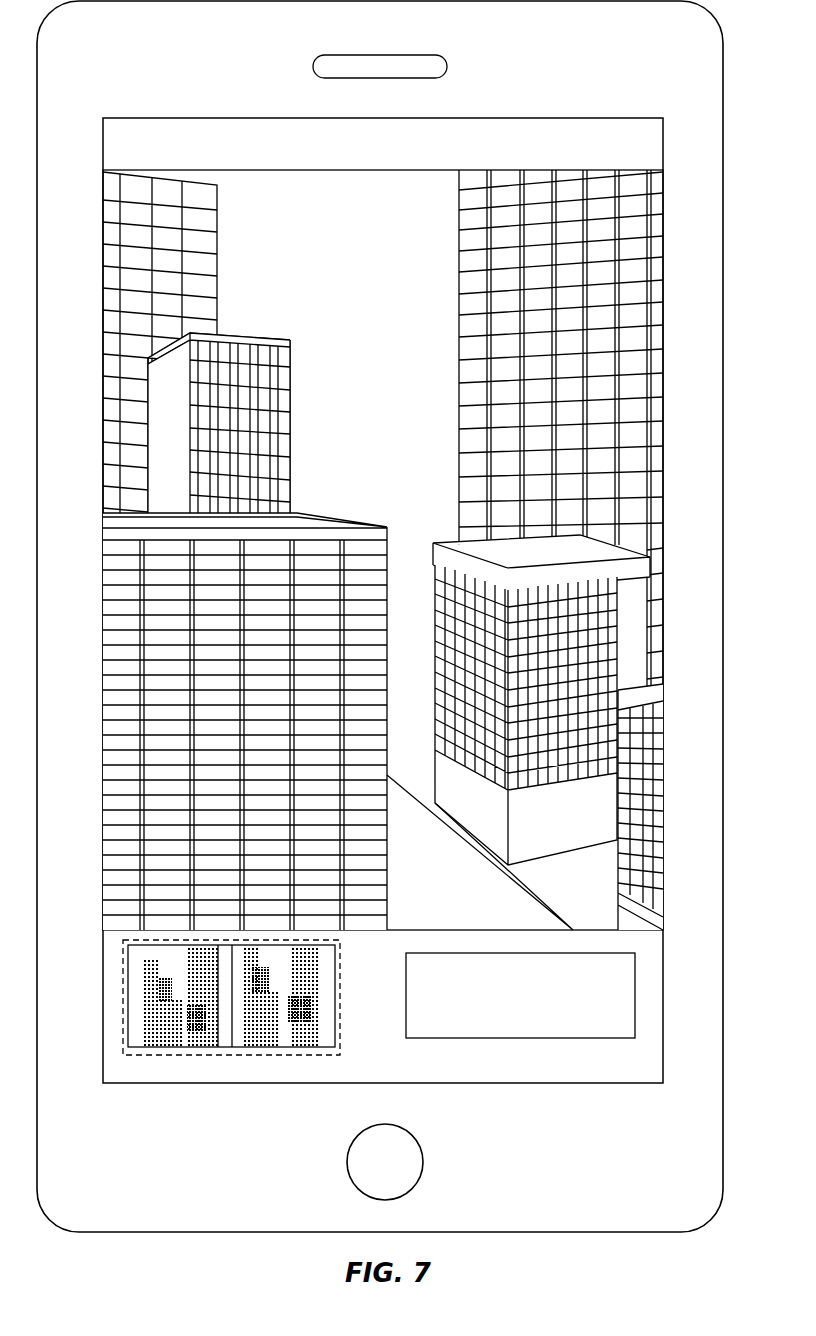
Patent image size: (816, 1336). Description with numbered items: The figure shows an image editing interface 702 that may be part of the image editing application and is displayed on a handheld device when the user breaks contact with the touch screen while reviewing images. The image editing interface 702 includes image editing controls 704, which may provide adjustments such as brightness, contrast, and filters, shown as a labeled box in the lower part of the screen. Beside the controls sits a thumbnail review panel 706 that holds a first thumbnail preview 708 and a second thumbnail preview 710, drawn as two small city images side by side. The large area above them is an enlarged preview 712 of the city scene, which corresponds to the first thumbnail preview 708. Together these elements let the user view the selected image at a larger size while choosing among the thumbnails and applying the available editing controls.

The image editing interface 702 is at (508, 118).
The image editing controls 704 is at (520, 1038).
The thumbnail review panel 706 is at (340, 984).
The first thumbnail preview 708 is at (167, 1046).
The second thumbnail preview 710 is at (262, 1046).
The enlarged preview 712 is at (322, 170).